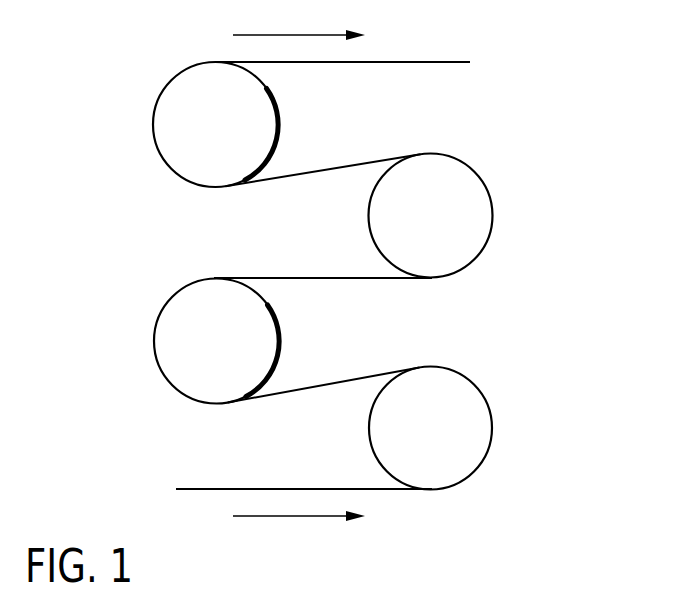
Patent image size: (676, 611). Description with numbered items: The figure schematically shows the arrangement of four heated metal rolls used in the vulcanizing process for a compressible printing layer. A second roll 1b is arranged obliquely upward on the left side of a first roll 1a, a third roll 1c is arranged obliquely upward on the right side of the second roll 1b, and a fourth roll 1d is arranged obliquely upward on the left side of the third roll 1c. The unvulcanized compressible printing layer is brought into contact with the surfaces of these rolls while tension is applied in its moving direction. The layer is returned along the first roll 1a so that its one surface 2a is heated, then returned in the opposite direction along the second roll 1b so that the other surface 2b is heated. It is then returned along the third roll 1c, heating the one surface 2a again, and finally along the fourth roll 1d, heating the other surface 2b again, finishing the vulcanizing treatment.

The first roll 1a is at (493, 428).
The second roll 1b is at (280, 335).
The third roll 1c is at (492, 208).
The fourth roll 1d is at (277, 97).
The one surface 2a is at (295, 277).
The other surface 2b is at (358, 165).